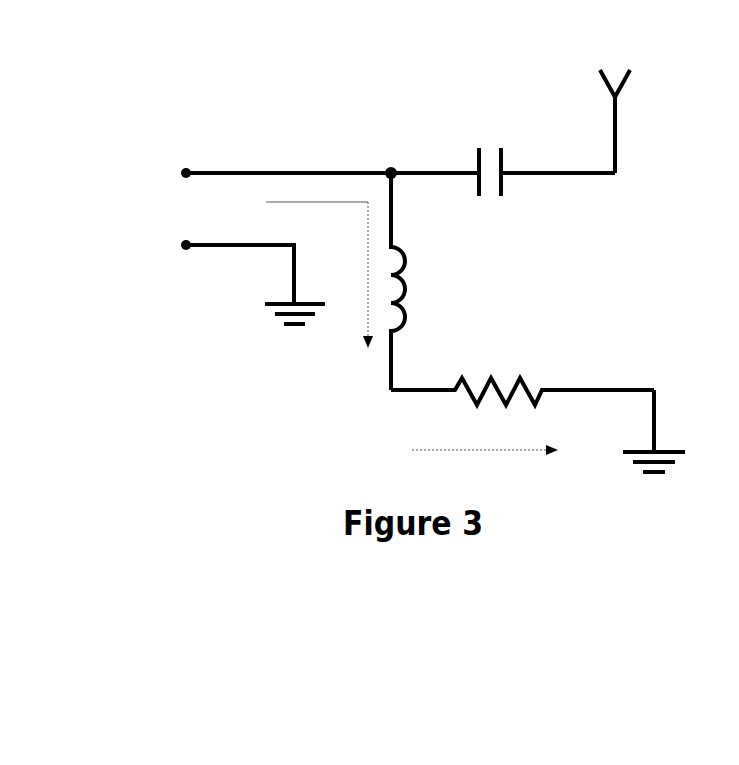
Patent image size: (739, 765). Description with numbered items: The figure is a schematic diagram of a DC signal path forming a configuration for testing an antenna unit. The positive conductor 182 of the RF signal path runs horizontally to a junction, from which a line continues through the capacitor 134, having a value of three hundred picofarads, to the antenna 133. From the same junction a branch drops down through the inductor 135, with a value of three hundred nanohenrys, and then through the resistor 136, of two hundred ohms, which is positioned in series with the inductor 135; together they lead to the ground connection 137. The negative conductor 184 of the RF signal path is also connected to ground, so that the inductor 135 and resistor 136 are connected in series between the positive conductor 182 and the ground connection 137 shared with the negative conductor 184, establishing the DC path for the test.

The positive conductor 182 is at (295, 173).
The negative conductor 184 is at (218, 278).
The antenna 133 is at (617, 110).
The capacitor 134 is at (466, 157).
The inductor 135 is at (408, 275).
The resistor 136 is at (503, 378).
The ground connection 137 is at (664, 436).